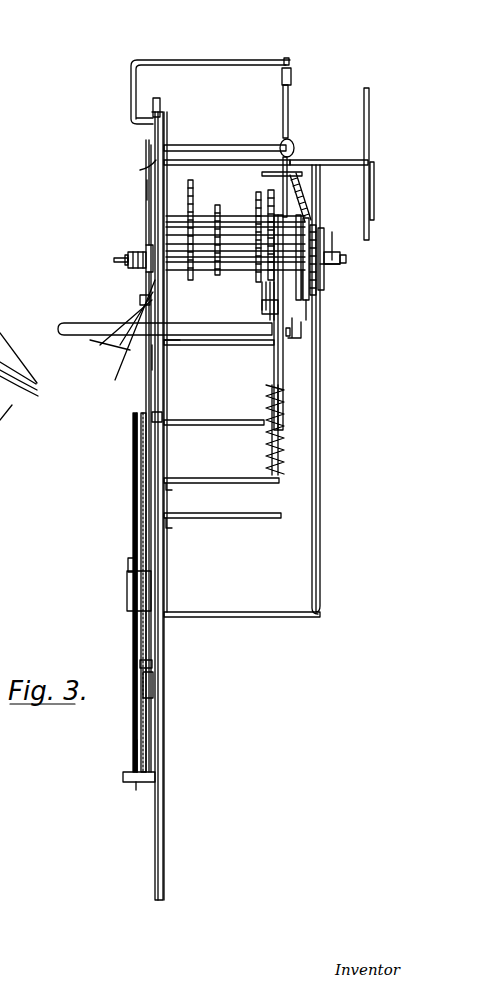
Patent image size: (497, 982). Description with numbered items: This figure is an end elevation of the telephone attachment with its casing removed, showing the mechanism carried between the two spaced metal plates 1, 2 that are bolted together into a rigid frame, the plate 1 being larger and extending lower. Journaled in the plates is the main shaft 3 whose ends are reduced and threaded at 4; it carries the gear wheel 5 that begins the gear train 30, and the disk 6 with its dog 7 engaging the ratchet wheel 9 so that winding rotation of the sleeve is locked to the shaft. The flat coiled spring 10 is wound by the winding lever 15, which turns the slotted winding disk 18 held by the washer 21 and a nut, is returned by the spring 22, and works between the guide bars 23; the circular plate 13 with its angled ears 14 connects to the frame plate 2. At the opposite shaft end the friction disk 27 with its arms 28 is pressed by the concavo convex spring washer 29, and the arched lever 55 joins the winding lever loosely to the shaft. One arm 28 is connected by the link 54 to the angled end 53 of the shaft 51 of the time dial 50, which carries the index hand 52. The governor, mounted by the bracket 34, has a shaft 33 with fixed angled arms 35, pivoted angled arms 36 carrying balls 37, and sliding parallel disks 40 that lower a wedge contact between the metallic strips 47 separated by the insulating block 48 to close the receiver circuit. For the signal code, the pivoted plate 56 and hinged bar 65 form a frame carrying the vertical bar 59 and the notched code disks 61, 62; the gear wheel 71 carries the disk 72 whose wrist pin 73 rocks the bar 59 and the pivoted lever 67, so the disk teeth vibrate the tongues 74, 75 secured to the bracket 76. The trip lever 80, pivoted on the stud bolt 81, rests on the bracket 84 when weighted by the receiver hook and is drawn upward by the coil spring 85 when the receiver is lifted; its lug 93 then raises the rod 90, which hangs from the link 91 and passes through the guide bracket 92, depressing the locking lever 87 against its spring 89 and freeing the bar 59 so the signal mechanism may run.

The metal plate 1 is at (166, 732).
The metal plate 2 is at (285, 357).
The shaft 3 is at (250, 274).
The reduced threaded portion 4 is at (340, 262).
The gear wheel 5 is at (262, 308).
The disk 6 is at (303, 328).
The dog 7 is at (318, 242).
The ratchet wheel 9 is at (268, 320).
The spring 10 is at (308, 288).
The circular plate 13 is at (324, 238).
The angled ears 14 is at (306, 225).
The winding lever 15 is at (338, 270).
The disk 18 is at (334, 248).
The washer 21 is at (346, 258).
The spring 22 is at (300, 200).
The guide bars 23 is at (322, 470).
The friction disk 27 is at (147, 245).
The arms 28 is at (147, 256).
The concavo convex spring washer 29 is at (140, 300).
The gear train 30 is at (216, 230).
The shaft 33 is at (290, 60).
The bracket 34 is at (180, 62).
The angled arms 35 is at (282, 74).
The angled arms 36 is at (289, 118).
The balls 37 is at (294, 150).
The parallel disks 40 is at (262, 180).
The metallic strips 47 is at (270, 300).
The block of insulating material 48 is at (276, 322).
The time dial 50 is at (370, 116).
The shaft 51 is at (347, 160).
The index hand 52 is at (376, 186).
The angled end 53 is at (148, 168).
The link 54 is at (145, 182).
The arched lever 55 is at (114, 260).
The plate 56 is at (127, 587).
The bar 59 is at (150, 380).
The disk 61 is at (133, 462).
The disk 62 is at (142, 480).
The hinged bar 65 is at (128, 564).
The pivoted lever 67 is at (120, 340).
The gear wheel 71 is at (158, 345).
The disk 72 is at (115, 380).
The wrist pin 73 is at (100, 340).
The tongue 74 is at (128, 772).
The tongue 75 is at (143, 772).
The bracket 76 is at (140, 790).
The trip lever 80 is at (68, 323).
The stud bolt 81 is at (250, 430).
The bracket 84 is at (255, 518).
The coil spring 85 is at (278, 440).
The locking lever 87 is at (154, 662).
The spring 89 is at (155, 688).
The rod 90 is at (150, 452).
The link 91 is at (162, 106).
The guide bracket 92 is at (168, 425).
The lug 93 is at (160, 335).